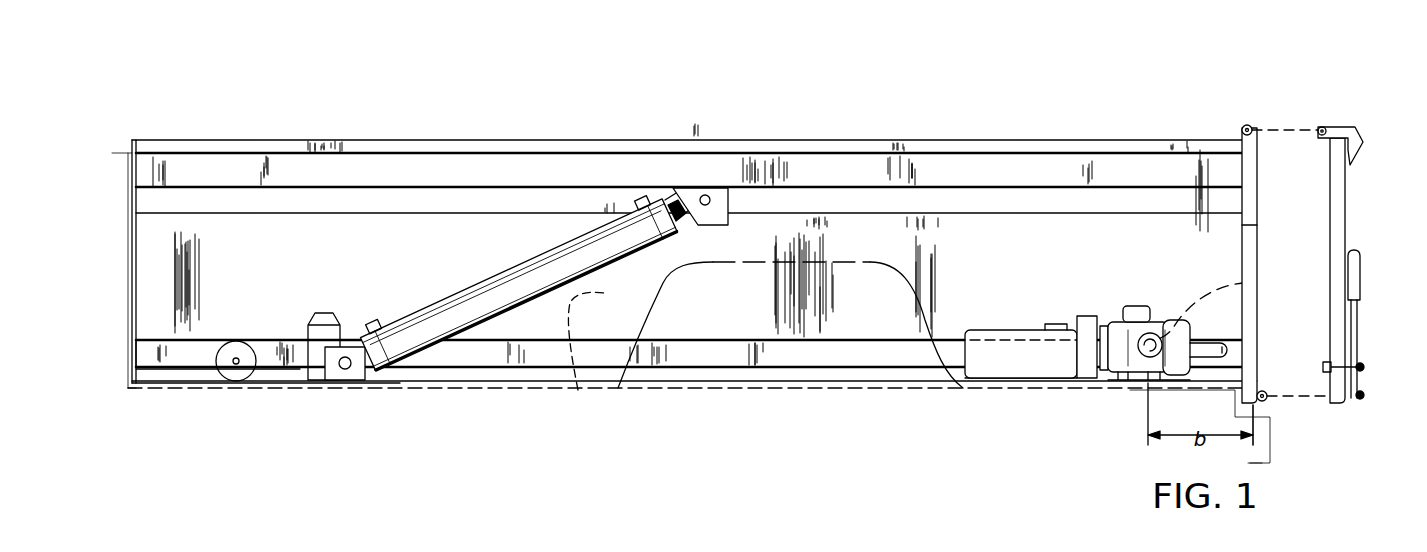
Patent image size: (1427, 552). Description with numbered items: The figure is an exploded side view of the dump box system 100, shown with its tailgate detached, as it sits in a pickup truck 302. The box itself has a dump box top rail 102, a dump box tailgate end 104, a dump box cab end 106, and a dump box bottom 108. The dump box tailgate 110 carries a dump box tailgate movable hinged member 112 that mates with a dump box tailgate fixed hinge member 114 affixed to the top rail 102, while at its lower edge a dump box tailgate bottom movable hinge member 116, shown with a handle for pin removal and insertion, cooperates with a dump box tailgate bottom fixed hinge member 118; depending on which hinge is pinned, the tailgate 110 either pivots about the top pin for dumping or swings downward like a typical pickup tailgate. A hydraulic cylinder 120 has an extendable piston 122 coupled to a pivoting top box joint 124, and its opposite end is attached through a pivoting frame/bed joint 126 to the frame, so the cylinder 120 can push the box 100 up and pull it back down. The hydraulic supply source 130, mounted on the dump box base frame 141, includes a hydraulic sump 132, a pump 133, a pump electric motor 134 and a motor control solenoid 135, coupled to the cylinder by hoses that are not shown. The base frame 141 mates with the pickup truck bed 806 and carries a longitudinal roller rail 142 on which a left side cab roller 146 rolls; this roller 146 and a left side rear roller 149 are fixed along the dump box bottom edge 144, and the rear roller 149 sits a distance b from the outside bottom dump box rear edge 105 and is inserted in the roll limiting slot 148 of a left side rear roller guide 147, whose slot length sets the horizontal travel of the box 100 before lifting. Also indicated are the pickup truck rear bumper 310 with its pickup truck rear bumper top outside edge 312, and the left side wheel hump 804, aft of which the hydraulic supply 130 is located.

The dump box system 100 is at (322, 85).
The dump box top rail 102 is at (217, 145).
The dump box tailgate end 104 is at (1248, 170).
The outside bottom dump box rear edge 105 is at (1272, 430).
The dump box cab end 106 is at (132, 167).
The dump box bottom 108 is at (422, 330).
The dump box tailgate 110 is at (1367, 170).
The dump box tailgate movable hinged member 112 is at (1338, 127).
The dump box tailgate fixed hinge member 114 is at (1246, 126).
The dump box tailgate bottom movable hinge member 116 is at (1373, 292).
The dump box tailgate bottom fixed hinge member 118 is at (1267, 398).
The hydraulic cylinder 120 is at (500, 355).
The extendable piston 122 is at (675, 207).
The pivoting top box joint 124 is at (718, 195).
The pivoting frame/bed joint 126 is at (358, 372).
The hydraulic supply source 130 is at (1012, 375).
The hydraulic sump 132 is at (1052, 368).
The pump 133 is at (1087, 320).
The pump electric motor 134 is at (1132, 358).
The motor control solenoid 135 is at (1137, 310).
The dump box base frame 141 is at (173, 383).
The longitudinal roller rail 142 is at (205, 373).
The dump box bottom edge 144 is at (134, 362).
The left side cab roller 146 is at (237, 368).
The left side rear roller guide 147 is at (1226, 336).
The roll limiting slot 148 is at (1223, 348).
The left side rear roller 149 is at (1247, 283).
The pickup truck 302 is at (112, 152).
The pickup truck rear bumper 310 is at (1268, 481).
The pickup truck rear bumper top outside edge 312 is at (1275, 425).
The left side wheel hump 804 is at (653, 315).
The pickup truck bed 806 is at (603, 333).